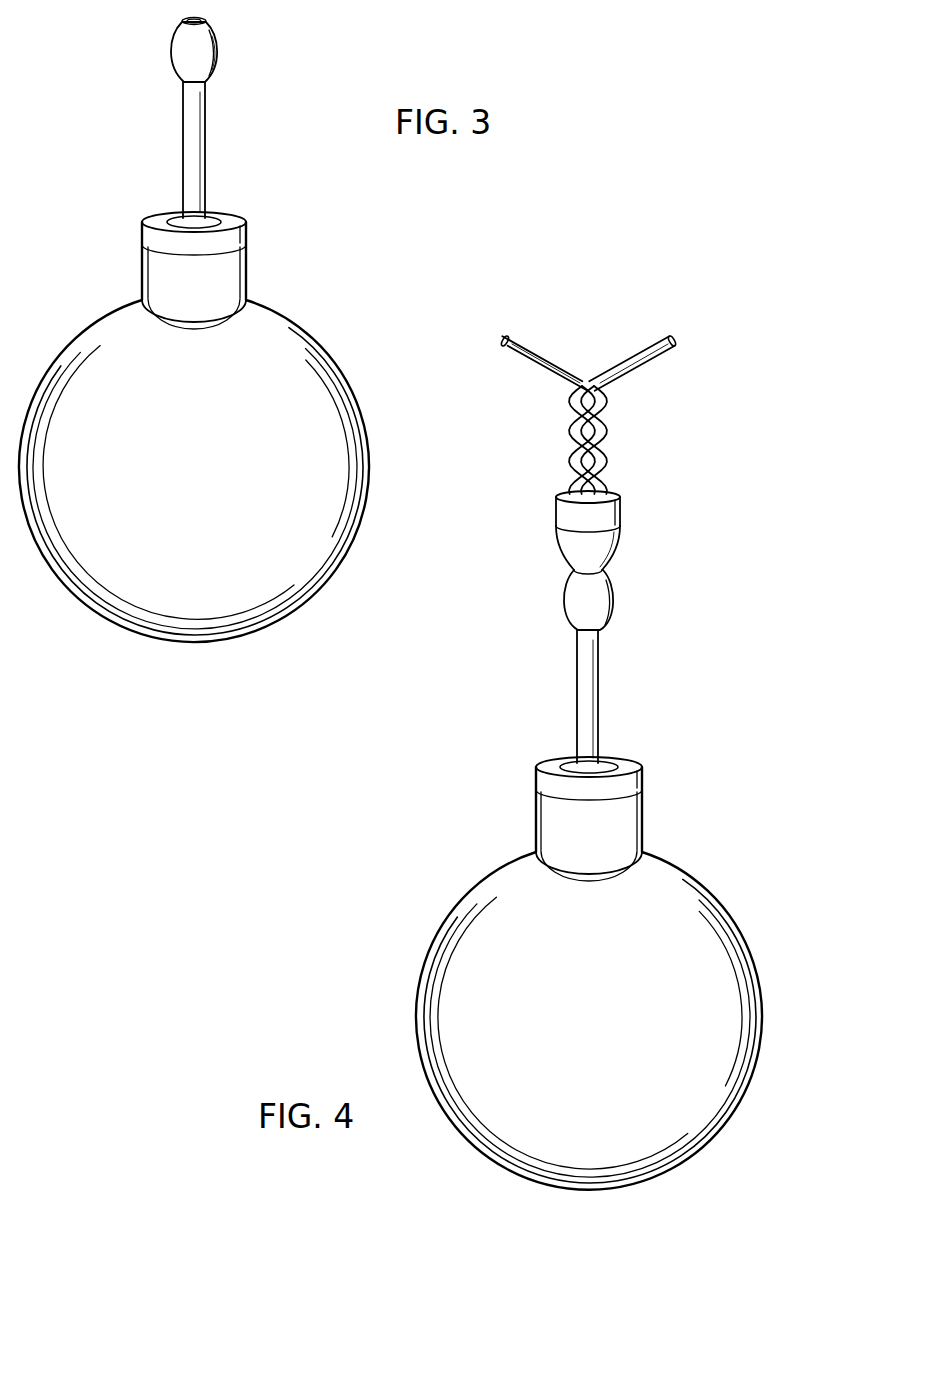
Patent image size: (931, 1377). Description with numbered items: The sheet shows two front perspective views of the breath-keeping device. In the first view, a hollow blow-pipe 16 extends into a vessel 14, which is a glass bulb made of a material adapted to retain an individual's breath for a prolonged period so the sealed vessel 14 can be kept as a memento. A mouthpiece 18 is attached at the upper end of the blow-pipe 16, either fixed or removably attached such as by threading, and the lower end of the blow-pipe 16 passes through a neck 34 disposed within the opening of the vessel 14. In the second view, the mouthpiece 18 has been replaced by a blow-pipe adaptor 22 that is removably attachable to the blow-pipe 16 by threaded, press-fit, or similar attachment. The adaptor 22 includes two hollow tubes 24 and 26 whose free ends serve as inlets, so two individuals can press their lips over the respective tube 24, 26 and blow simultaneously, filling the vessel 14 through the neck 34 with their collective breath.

In FIG. 3, the vessel 14 is at (72, 350).
In FIG. 4, the vessel 14 is at (737, 856).
In FIG. 3, the blow-pipe 16 is at (110, 132).
In FIG. 4, the blow-pipe 16 is at (648, 687).
In FIG. 3, the mouthpiece 18 is at (207, 50).
In FIG. 4, the blow-pipe adaptor 22 is at (660, 452).
In FIG. 4, the hollow tube 24 is at (530, 370).
In FIG. 4, the hollow tube 26 is at (650, 345).
In FIG. 3, the neck 34 is at (236, 219).
In FIG. 4, the neck 34 is at (540, 785).